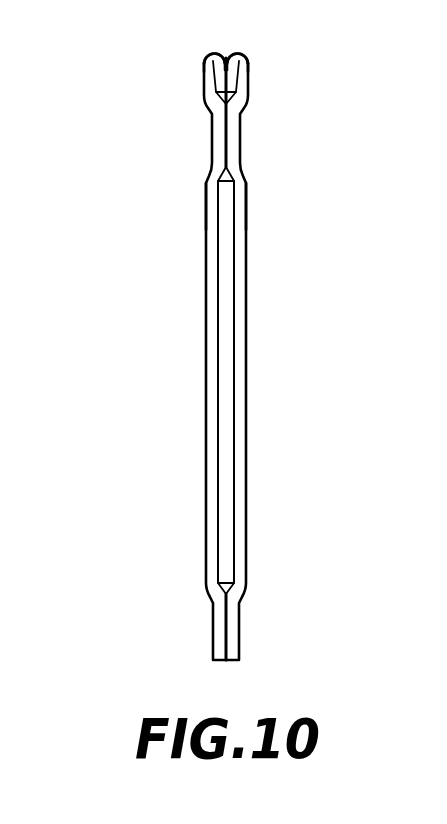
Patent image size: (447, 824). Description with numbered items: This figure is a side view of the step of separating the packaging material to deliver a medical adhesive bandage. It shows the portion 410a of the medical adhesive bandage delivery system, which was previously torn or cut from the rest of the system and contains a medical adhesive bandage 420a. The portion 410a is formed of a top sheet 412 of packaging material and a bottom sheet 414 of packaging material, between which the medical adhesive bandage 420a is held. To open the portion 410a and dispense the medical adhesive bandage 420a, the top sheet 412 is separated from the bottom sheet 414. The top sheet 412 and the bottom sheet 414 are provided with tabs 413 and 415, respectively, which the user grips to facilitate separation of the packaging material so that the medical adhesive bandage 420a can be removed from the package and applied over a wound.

The portion of the medical adhesive bandage delivery system 410a is at (138, 435).
The top sheet 412 is at (245, 189).
The tab 413 is at (247, 55).
The bottom sheet 414 is at (209, 195).
The tab 415 is at (205, 57).
The medical adhesive bandage 420a is at (232, 353).